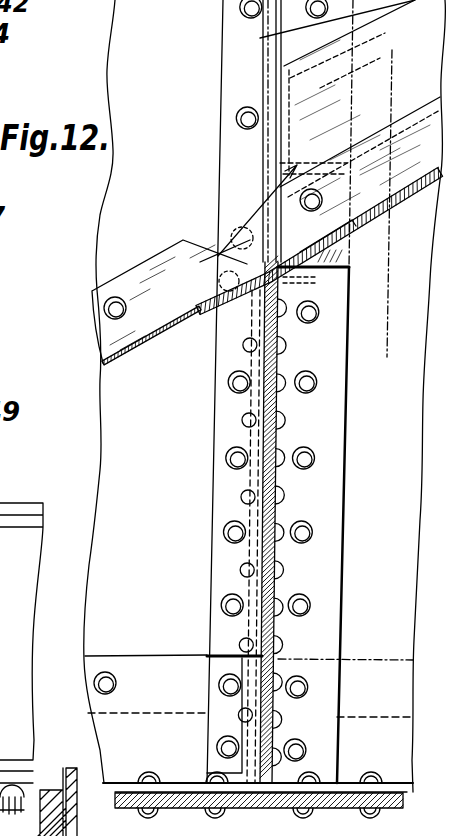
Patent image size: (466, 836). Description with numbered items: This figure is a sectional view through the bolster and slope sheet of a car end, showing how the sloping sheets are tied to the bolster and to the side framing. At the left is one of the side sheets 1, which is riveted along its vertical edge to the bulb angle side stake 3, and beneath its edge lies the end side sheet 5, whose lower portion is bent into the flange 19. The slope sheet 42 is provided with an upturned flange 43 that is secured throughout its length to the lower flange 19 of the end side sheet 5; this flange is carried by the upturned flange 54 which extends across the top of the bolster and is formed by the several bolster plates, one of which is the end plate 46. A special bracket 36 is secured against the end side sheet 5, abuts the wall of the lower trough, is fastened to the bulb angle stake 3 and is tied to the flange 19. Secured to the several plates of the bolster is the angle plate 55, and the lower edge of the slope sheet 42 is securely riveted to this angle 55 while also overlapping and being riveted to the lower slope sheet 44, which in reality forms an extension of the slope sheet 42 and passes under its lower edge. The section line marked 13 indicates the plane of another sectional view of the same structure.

The side sheet 1 is at (120, 238).
The side stake 3 is at (247, 483).
The end side sheet 5 is at (260, 38).
The section line 13- 13 is at (418, 50).
The flange 19 is at (315, 157).
The bracket 36 is at (322, 255).
The slope sheet 42 is at (384, 236).
The flange 43 is at (403, 133).
The lower slope sheet 44 is at (158, 330).
The end plate 46 is at (270, 553).
The upturned flange 54 is at (338, 232).
The angle plate 55 is at (266, 306).